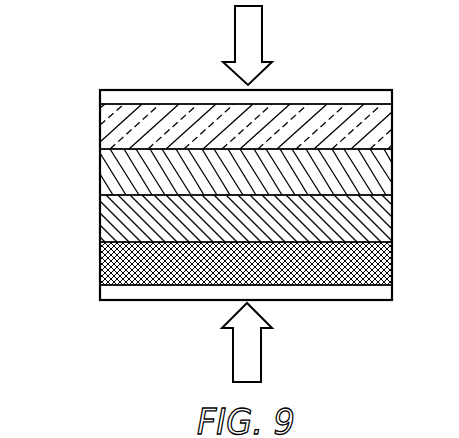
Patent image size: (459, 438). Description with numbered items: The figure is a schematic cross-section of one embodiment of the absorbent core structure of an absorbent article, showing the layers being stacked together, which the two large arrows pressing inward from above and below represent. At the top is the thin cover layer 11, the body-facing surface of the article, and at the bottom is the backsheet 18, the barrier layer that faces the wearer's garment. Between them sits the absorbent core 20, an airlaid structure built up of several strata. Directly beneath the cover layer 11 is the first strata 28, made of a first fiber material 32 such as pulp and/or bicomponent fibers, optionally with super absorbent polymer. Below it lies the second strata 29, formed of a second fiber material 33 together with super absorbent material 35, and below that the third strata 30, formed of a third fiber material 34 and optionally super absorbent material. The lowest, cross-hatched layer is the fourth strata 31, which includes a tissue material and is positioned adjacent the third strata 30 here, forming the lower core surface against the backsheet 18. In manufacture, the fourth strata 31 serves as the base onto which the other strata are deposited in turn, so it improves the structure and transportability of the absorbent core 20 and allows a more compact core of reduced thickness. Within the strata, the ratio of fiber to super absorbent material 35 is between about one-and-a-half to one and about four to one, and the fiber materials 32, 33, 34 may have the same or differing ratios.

The absorbent core 20 is at (221, 183).
The cover layer 11 is at (317, 98).
The first fiber material 32 is at (113, 123).
The first strata 28 is at (241, 124).
The second strata 29 is at (240, 172).
The third strata 30 is at (237, 238).
The fourth strata 31 is at (397, 244).
The super absorbent material 35 is at (235, 212).
The second fiber material 33 is at (397, 151).
The third fiber material 34 is at (397, 197).
The backsheet 18 is at (301, 293).